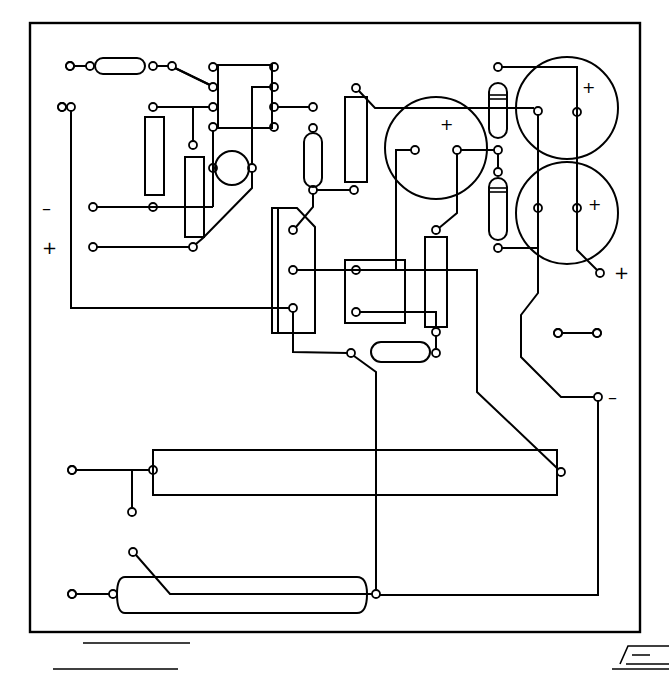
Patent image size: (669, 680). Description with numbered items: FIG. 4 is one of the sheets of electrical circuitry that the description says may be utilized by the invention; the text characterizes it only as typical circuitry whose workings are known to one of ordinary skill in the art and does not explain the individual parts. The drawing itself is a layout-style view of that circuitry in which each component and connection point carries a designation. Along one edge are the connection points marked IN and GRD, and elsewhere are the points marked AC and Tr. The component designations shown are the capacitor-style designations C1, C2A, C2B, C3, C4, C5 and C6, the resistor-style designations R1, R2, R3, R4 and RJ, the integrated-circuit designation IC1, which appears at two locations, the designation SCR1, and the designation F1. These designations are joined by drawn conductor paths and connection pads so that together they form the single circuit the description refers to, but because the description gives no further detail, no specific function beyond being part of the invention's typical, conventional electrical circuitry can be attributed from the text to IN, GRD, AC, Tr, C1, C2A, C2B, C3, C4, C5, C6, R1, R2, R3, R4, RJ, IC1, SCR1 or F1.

The input terminal IN is at (56, 67).
The ground terminal GRD is at (49, 107).
The capacitor C3 is at (120, 66).
The resistor R4 is at (240, 75).
The integrated circuit IC1 is at (311, 194).
The resistor R3 is at (158, 156).
The resistor R2 is at (198, 197).
The capacitor C6 is at (232, 162).
The capacitor C4 is at (313, 160).
The resistor RJ is at (359, 139).
The capacitor C1 is at (436, 148).
The capacitor C2A is at (567, 108).
The capacitor C2B is at (567, 213).
The silicon controlled rectifier SCR1 is at (293, 270).
The capacitor C5 is at (400, 352).
The transformer terminal Tr is at (586, 335).
The resistor R1 is at (355, 472).
The AC input terminals AC is at (66, 532).
The fuse F1 is at (242, 596).